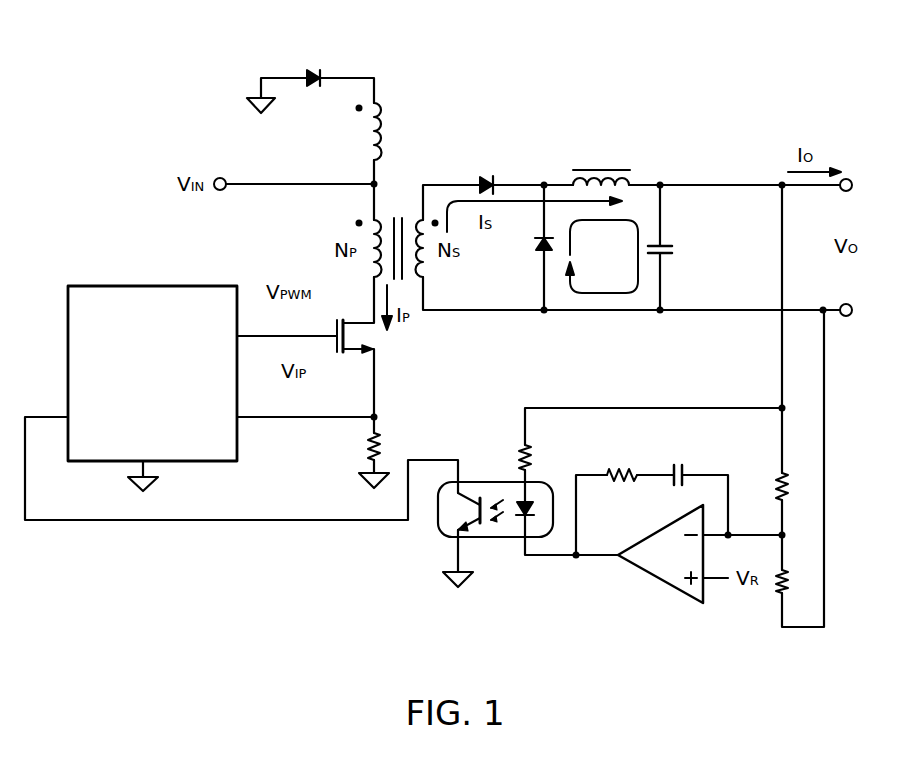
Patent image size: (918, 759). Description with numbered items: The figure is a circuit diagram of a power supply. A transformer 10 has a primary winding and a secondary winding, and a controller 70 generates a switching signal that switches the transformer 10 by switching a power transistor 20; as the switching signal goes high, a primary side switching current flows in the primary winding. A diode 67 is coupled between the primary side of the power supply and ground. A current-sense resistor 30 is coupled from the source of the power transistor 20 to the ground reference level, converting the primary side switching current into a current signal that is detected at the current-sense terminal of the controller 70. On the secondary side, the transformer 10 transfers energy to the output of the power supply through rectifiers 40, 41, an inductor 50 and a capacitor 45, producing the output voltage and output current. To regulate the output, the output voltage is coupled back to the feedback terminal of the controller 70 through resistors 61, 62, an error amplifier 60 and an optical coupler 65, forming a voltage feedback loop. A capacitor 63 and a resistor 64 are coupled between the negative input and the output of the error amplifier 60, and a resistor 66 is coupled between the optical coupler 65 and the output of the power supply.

The transformer 10 is at (376, 222).
The power transistor 20 is at (347, 358).
The current-sense resistor 30 is at (368, 448).
The rectifier 40 is at (485, 178).
The rectifier 41 is at (541, 256).
The capacitor 45 is at (668, 246).
The inductor 50 is at (598, 169).
The error amplifier 60 is at (665, 590).
The resistor 61 is at (792, 487).
The resistor 62 is at (792, 583).
The capacitor 63 is at (686, 465).
The resistor 64 is at (624, 466).
The optical coupler 65 is at (497, 540).
The resistor 66 is at (534, 458).
The diode 67 is at (320, 70).
The controller 70 is at (158, 285).